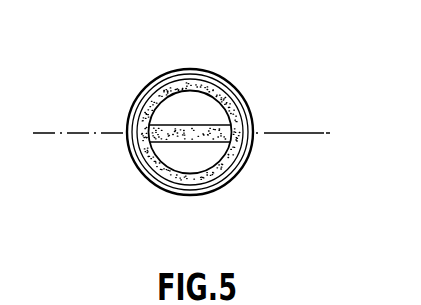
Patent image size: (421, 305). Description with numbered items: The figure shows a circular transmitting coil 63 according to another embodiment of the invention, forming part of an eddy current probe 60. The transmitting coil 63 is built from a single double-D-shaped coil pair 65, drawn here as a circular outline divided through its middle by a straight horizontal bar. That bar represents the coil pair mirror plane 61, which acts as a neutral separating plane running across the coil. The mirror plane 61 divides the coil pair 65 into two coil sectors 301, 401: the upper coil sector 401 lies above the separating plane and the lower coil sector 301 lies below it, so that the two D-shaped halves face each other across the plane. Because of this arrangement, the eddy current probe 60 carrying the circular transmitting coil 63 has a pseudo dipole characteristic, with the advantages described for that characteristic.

The eddy current probe 60 is at (223, 134).
The coil pair mirror plane 61 is at (97, 133).
The circular transmitting coil 63 is at (232, 189).
The double-D-shaped coil pair 65 is at (206, 82).
The coil sector 301 is at (178, 162).
The coil sector 401 is at (221, 115).